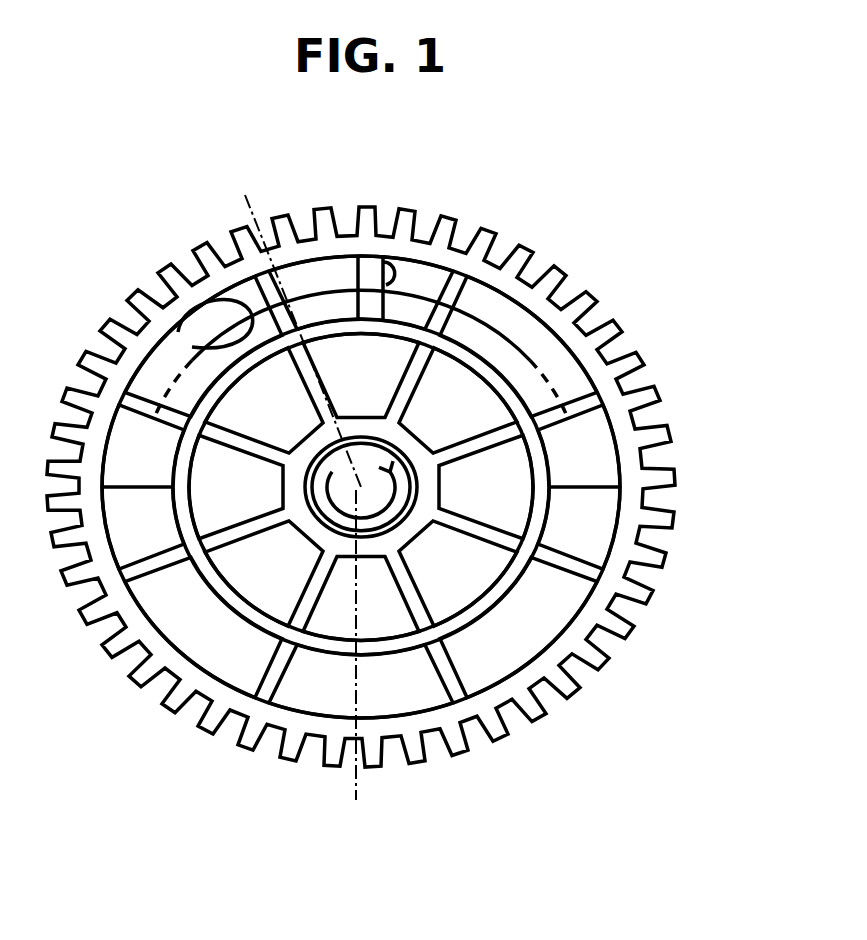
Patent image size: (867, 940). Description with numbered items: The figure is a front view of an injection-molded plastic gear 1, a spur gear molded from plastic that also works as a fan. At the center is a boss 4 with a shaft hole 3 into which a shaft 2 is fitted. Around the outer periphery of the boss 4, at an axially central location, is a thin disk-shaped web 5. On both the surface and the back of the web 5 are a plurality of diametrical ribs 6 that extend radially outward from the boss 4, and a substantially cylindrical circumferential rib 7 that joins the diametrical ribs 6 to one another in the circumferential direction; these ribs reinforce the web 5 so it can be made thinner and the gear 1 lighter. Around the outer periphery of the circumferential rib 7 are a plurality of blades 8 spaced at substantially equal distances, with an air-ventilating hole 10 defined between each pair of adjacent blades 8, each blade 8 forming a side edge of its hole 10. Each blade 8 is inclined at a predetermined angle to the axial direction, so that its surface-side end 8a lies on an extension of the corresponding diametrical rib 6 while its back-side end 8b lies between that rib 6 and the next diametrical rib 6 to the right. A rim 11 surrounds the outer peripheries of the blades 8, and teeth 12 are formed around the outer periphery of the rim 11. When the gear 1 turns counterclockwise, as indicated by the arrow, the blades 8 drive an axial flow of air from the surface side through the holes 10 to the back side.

The injection-molded plastic gear 1 is at (595, 288).
The shaft 2 is at (265, 190).
The shaft hole 3 is at (227, 314).
The boss 4 is at (225, 634).
The web 5 is at (369, 732).
The diametrical ribs 6 is at (300, 410).
The circumferential rib 7 is at (227, 687).
The blades 8 is at (303, 252).
The end of blade on the surface side 8a is at (166, 288).
The end of blade on the back side 8b is at (383, 255).
The air-ventilating holes 10 is at (399, 422).
The rim 11 is at (422, 371).
The teeth 12 is at (401, 487).